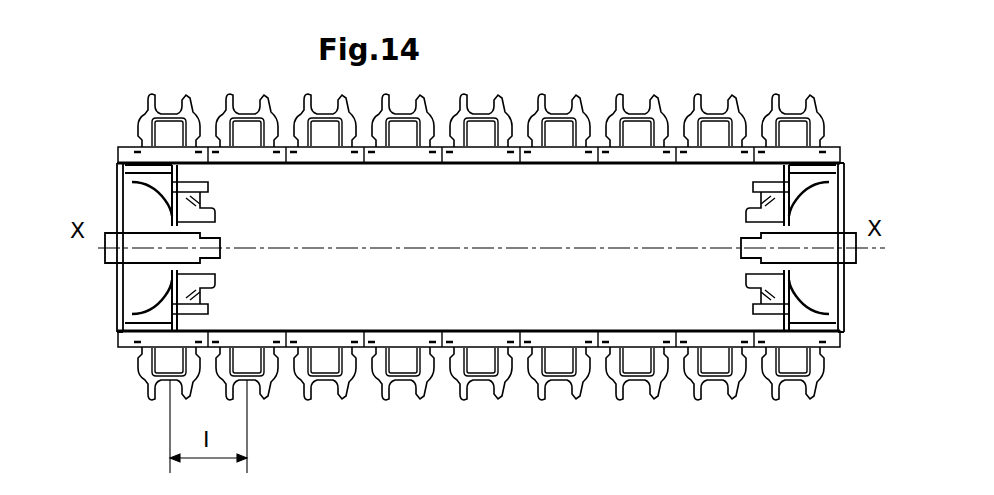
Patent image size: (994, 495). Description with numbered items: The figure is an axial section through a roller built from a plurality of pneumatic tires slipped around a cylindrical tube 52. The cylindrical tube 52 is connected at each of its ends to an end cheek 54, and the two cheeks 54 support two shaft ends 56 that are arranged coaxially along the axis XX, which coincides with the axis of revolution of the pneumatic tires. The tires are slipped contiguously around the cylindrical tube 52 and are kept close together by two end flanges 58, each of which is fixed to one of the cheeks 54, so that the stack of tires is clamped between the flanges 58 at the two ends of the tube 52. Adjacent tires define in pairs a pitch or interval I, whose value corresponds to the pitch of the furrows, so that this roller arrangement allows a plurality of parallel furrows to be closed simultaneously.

The cylindrical tube 52 is at (565, 330).
The end cheek 54 is at (206, 290).
The shaft end 56 is at (118, 263).
The end flange 58 is at (122, 326).